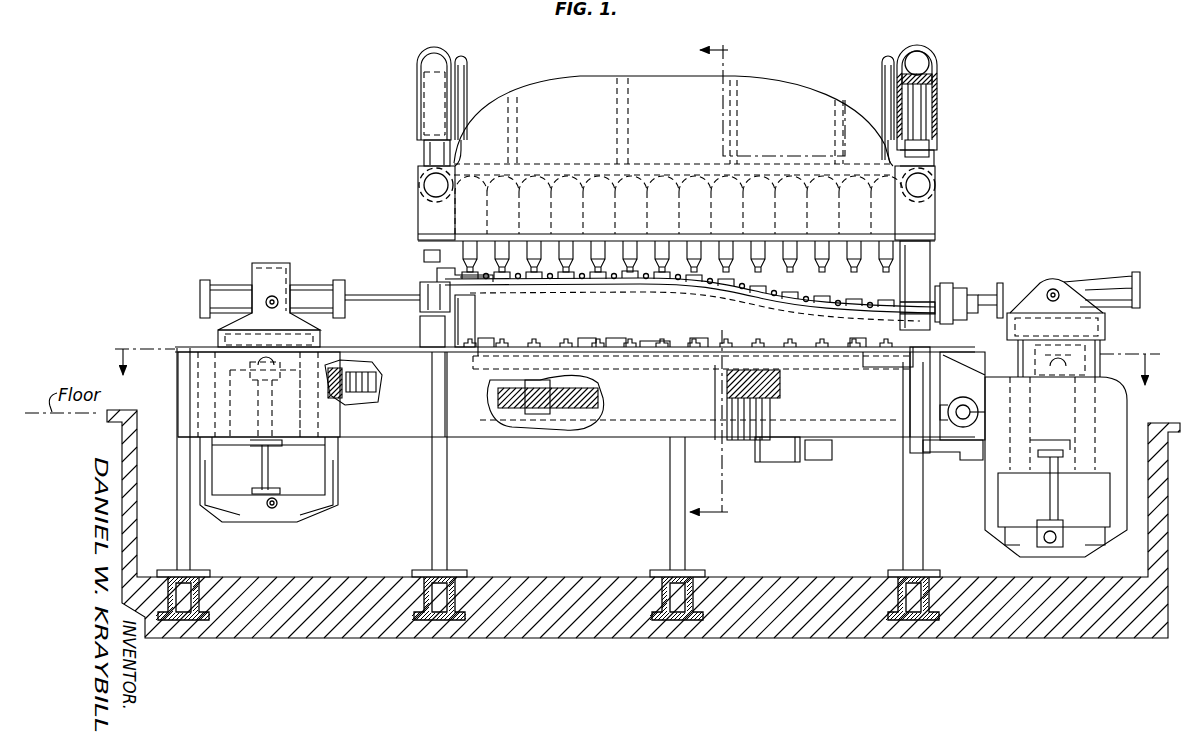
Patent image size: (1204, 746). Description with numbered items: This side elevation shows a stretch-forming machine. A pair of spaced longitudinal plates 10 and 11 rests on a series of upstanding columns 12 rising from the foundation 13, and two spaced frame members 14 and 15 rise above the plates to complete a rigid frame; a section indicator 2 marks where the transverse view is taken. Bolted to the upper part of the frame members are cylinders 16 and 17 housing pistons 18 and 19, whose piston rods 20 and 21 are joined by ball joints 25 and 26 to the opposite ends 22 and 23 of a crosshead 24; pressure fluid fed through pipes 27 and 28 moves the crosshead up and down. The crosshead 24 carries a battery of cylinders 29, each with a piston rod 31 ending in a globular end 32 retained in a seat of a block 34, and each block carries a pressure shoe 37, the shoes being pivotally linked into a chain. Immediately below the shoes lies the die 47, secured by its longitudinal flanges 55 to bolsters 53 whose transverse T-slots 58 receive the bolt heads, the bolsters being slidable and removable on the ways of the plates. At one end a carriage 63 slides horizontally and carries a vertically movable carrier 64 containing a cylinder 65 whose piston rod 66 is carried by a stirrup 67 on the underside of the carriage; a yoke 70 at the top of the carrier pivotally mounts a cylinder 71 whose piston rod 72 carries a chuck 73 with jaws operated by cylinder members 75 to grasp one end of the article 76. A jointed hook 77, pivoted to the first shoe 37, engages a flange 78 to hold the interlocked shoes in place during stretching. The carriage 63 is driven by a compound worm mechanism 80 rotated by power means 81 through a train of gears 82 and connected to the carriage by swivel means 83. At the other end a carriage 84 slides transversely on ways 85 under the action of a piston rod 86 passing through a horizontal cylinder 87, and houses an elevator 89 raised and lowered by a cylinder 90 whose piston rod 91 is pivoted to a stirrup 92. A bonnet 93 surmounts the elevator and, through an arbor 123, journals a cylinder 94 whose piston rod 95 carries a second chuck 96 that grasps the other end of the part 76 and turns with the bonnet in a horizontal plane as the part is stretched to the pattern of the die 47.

The section line 2- 2 is at (636, 351).
The longitudinal plate 10 is at (596, 426).
The longitudinal plate 11 is at (516, 423).
The upstanding columns 12 is at (190, 533).
The foundation 13 is at (745, 636).
The frame member 14 is at (428, 250).
The frame member 15 is at (922, 262).
The cylinder 16 is at (437, 48).
The cylinder 17 is at (934, 78).
The piston 18 is at (424, 72).
The piston 19 is at (925, 66).
The piston rod 20 is at (424, 150).
The piston rod 21 is at (928, 110).
The crosshead end 22 is at (418, 215).
The crosshead end 23 is at (936, 215).
The crosshead 24 is at (658, 76).
The ball joint 25 is at (424, 182).
The ball joint 26 is at (936, 182).
The pipe 27 is at (470, 64).
The pipe 28 is at (462, 128).
The cylinders 29 is at (712, 178).
The piston rod 31 is at (478, 252).
The globular end 32 is at (424, 260).
The block 34 is at (602, 272).
The pressure shoe 37 is at (496, 290).
The die 47 is at (659, 323).
The bolster 53 is at (616, 340).
The longitudinal flanges 55 is at (478, 342).
The T-slots 58 is at (505, 370).
The carriage 63 is at (342, 470).
The carrier 64 is at (320, 338).
The cylinder 65 is at (262, 393).
The piston rod 66 is at (278, 477).
The stirrup 67 is at (283, 522).
The yoke 70 is at (270, 262).
The cylinder 71 is at (224, 300).
The piston rod 72 is at (354, 296).
The chuck 73 is at (412, 318).
The cylinder members 75 is at (414, 296).
The article 76 is at (462, 300).
The jointed hook 77 is at (462, 274).
The flange 78 is at (432, 331).
The compound worm mechanism 80 is at (602, 384).
The power means 81 is at (820, 464).
The train of gears 82 is at (716, 440).
The swivel means 83 is at (352, 400).
The carriage 84 is at (1130, 404).
The ways 85 is at (890, 362).
The piston rod 86 is at (972, 424).
The cylinder 87 is at (972, 406).
The elevator 89 is at (1014, 350).
The cylinder 90 is at (1050, 460).
The piston rod 91 is at (1060, 492).
The stirrup 92 is at (1080, 546).
The bonnet 93 is at (1105, 326).
The cylinder 94 is at (1115, 281).
The piston rod 95 is at (984, 295).
The chuck 96 is at (948, 286).
The arbor 123 is at (1053, 289).